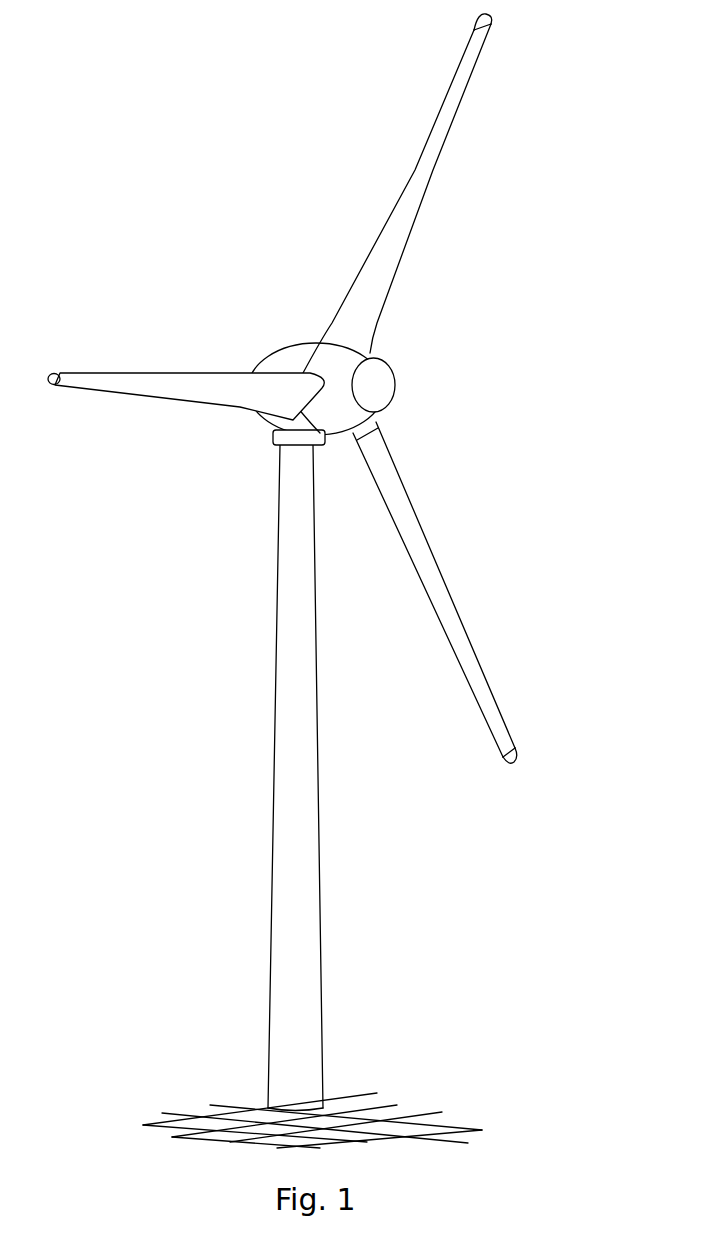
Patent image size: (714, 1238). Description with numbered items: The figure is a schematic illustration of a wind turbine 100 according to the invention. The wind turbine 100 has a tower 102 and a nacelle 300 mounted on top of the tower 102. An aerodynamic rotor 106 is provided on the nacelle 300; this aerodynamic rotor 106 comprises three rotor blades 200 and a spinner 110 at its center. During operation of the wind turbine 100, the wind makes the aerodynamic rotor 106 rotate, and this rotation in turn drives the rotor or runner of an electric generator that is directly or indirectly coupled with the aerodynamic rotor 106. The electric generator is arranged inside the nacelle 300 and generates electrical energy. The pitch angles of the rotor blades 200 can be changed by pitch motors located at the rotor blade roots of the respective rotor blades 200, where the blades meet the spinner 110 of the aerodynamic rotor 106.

The wind turbine 100 is at (235, 512).
The tower 102 is at (308, 853).
The aerodynamic rotor 106 is at (460, 310).
The spinner 110 is at (382, 382).
The rotor blade 200 is at (430, 145).
The nacelle 300 is at (292, 363).